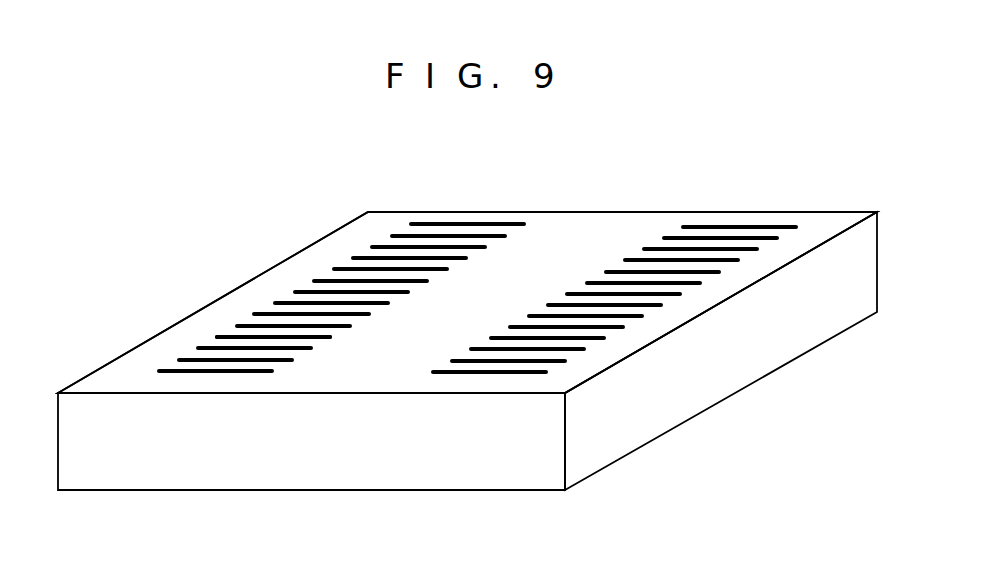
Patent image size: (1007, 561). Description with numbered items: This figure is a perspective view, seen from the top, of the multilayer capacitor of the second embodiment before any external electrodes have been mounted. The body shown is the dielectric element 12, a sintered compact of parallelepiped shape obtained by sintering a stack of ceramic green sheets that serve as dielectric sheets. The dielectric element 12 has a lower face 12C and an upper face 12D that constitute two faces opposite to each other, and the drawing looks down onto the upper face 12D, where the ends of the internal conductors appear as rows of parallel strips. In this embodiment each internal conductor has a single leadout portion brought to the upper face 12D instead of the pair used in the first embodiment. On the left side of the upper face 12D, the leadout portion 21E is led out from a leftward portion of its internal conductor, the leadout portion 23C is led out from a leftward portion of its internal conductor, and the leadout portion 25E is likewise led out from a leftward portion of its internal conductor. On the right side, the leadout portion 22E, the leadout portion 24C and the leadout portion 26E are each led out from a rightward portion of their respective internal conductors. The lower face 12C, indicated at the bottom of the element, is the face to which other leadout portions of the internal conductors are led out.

The dielectric element 12 is at (695, 212).
The lower face 12C is at (385, 490).
The upper face 12D is at (585, 220).
The leadout portion 21E is at (159, 371).
The leadout portion 22E is at (450, 361).
The leadout portion 23C is at (179, 360).
The leadout portion 24C is at (567, 294).
The leadout portion 25E is at (218, 337).
The leadout portion 26E is at (529, 316).